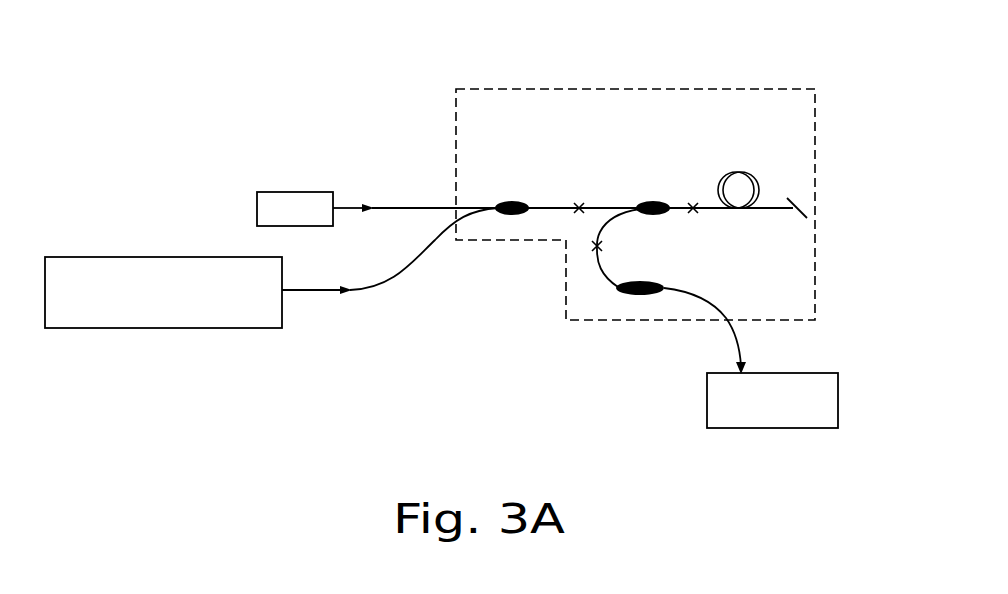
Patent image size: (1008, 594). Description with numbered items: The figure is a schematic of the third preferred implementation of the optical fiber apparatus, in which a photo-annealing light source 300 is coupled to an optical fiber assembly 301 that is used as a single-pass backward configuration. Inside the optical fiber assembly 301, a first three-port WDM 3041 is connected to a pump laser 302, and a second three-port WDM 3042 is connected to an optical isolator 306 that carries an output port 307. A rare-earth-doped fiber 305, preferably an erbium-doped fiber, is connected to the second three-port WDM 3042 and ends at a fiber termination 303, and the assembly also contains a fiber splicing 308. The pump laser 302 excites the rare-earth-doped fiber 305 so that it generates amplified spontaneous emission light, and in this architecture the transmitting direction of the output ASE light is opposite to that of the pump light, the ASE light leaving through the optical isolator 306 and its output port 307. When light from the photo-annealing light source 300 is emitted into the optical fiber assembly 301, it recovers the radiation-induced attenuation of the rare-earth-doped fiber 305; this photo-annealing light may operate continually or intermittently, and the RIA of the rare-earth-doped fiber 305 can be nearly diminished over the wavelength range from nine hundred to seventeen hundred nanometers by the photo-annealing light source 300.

The photo-annealing light source 300 is at (147, 257).
The optical fiber assembly 301 is at (553, 89).
The pump laser 302 is at (290, 192).
The fiber termination 303 is at (795, 203).
The first 3-port WDM 3041 is at (512, 201).
The second 3-port WDM 3042 is at (648, 201).
The rare-earth-doped fiber 305 is at (747, 172).
The optical isolator 306 is at (625, 297).
The output port 307 is at (778, 428).
The fiber splicing 308 is at (693, 205).